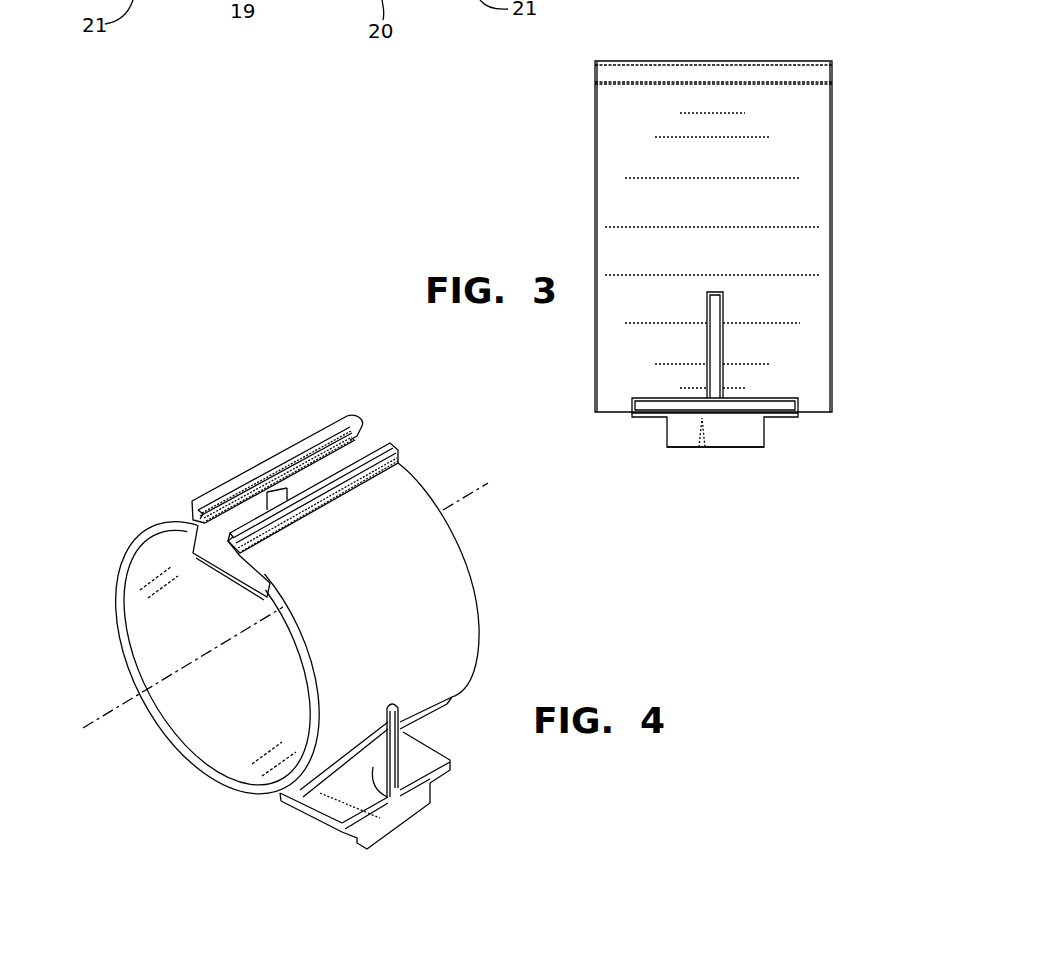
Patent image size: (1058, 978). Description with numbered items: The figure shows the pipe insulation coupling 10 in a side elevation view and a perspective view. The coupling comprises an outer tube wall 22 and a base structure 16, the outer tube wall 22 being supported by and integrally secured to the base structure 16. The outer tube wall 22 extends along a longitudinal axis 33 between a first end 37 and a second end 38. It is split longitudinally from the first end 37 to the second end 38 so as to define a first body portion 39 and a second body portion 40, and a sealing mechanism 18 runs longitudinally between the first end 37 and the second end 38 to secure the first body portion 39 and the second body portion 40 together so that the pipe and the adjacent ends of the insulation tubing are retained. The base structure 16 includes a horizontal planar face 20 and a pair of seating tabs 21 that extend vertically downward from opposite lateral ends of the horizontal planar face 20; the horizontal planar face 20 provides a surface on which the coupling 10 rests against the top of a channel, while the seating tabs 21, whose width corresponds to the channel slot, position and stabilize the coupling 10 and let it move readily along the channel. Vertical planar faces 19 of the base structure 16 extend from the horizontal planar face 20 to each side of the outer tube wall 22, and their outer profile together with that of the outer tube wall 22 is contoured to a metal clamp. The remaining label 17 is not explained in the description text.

In FIG. 3, the pipe insulation coupling 10 is at (539, 228).
In FIG. 4, the pipe insulation coupling 10 is at (240, 427).
In FIG. 3, the base structure 16 is at (802, 446).
In FIG. 4, the base structure 16 is at (471, 743).
In FIG. 4, the body wall 17 is at (512, 646).
In FIG. 3, the sealing mechanism 18 is at (733, 59).
In FIG. 4, the sealing mechanism 18 is at (409, 428).
In FIG. 3, the vertical planar faces 19 is at (723, 343).
In FIG. 4, the vertical planar faces 19 is at (380, 823).
In FIG. 3, the horizontal planar face 20 is at (633, 415).
In FIG. 4, the horizontal planar face 20 is at (328, 798).
In FIG. 3, the seating tabs 21 is at (725, 432).
In FIG. 4, the seating tabs 21 is at (387, 827).
In FIG. 3, the outer tube wall 22 is at (805, 128).
In FIG. 4, the outer tube wall 22 is at (412, 570).
In FIG. 4, the longitudinal axis 33 is at (108, 707).
In FIG. 3, the first end 37 is at (595, 100).
In FIG. 4, the first end 37 is at (120, 558).
In FIG. 3, the second end 38 is at (832, 97).
In FIG. 4, the second end 38 is at (402, 462).
In FIG. 4, the first body portion 39 is at (182, 507).
In FIG. 4, the second body portion 40 is at (357, 500).